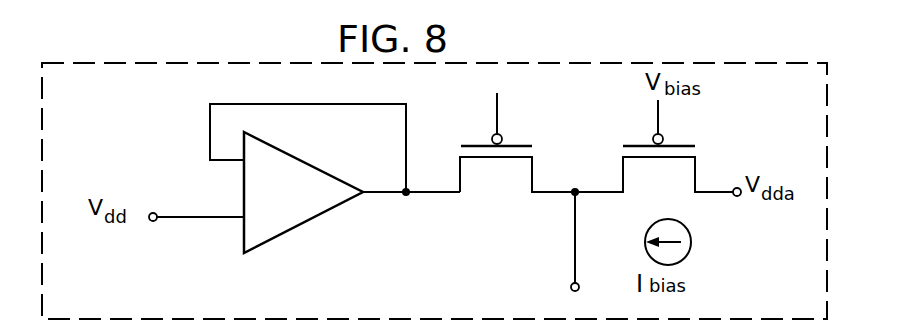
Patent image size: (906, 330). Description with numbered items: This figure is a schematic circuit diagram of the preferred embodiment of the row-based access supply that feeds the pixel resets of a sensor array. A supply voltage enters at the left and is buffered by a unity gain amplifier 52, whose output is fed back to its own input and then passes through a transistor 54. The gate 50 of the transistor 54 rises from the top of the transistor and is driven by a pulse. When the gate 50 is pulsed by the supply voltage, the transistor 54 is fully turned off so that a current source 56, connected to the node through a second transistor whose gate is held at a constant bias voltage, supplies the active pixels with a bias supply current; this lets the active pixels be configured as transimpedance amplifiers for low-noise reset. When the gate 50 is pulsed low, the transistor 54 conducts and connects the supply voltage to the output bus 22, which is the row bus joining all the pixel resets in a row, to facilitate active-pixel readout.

The row bus 22 is at (574, 257).
The gate 50 is at (497, 112).
The unity gain amplifier 52 is at (305, 160).
The transistor 54 is at (493, 160).
The current source 56 is at (660, 160).